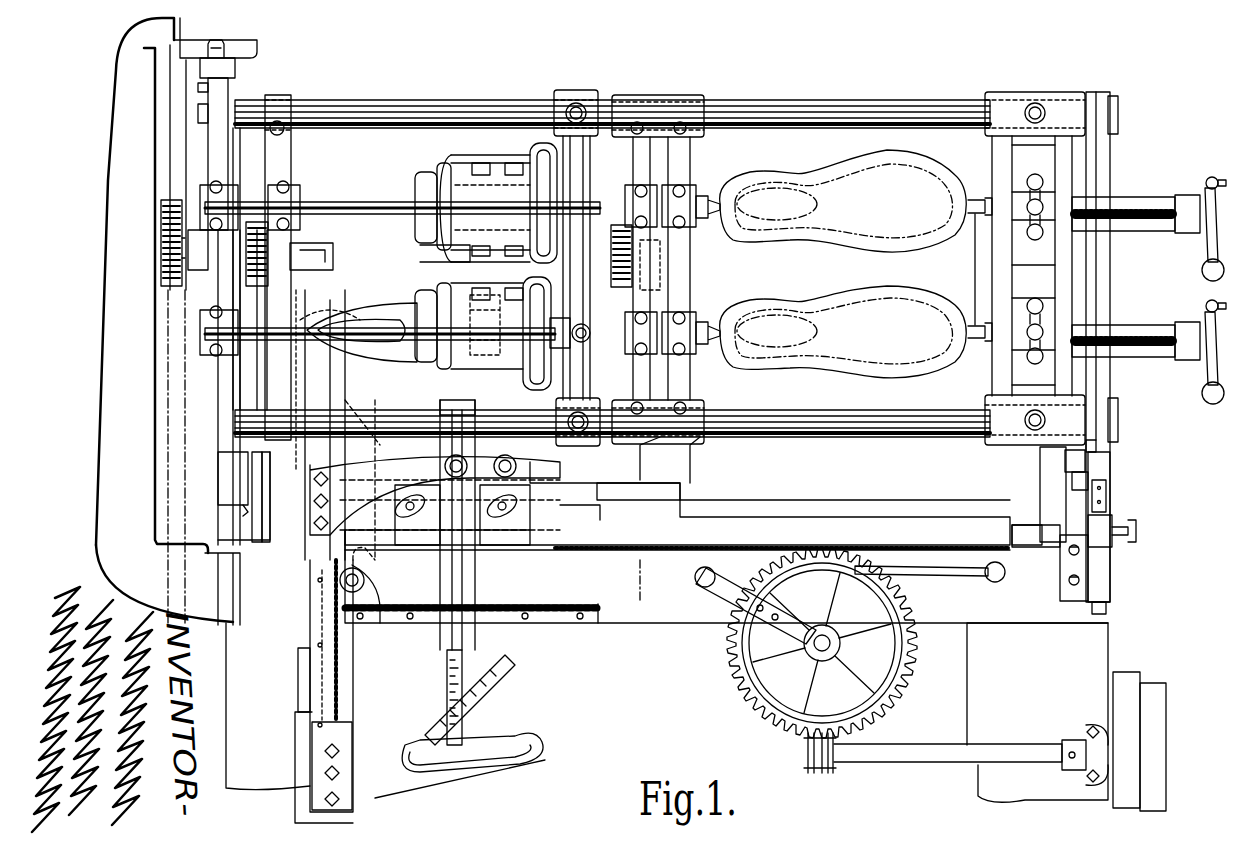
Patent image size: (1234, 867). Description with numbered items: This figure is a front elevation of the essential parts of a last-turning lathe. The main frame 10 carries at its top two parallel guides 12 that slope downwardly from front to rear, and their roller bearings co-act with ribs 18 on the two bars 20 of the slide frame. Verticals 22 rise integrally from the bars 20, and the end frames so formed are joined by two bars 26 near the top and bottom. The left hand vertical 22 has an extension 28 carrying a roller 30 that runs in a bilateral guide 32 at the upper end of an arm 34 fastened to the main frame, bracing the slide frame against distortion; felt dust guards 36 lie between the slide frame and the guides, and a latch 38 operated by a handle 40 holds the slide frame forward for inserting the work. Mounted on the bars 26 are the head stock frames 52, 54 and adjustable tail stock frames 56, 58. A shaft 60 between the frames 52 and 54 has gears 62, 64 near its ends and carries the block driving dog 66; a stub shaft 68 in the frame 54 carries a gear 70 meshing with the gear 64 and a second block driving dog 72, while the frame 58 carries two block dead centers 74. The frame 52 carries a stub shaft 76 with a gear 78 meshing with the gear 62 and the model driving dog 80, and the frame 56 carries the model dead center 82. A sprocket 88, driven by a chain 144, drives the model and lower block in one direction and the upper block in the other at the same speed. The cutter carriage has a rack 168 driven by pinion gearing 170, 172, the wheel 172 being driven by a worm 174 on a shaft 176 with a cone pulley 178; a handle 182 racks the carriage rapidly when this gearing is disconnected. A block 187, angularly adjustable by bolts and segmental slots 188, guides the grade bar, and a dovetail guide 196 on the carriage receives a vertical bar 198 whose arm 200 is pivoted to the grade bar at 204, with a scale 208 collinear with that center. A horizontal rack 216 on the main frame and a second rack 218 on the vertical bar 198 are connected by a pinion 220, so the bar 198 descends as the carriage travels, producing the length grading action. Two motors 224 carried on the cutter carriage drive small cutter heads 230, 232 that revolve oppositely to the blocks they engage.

The main frame 10 is at (1037, 712).
The guides 12 is at (255, 553).
The ribs 18 is at (1074, 480).
The bars 20 is at (1100, 470).
The verticals 22 is at (225, 367).
The bars 26 is at (834, 104).
The extension 28 is at (222, 92).
The roller 30 is at (236, 68).
The guide 32 is at (197, 56).
The arm 34 is at (118, 235).
The dust guards 36 is at (1092, 448).
The latch 38 is at (1107, 506).
The handle 40 is at (1134, 535).
The head stock frame 52 is at (283, 157).
The head stock frame 54 is at (682, 150).
The adjustable tail stock frame 56 is at (558, 138).
The adjustable tail stock frame 58 is at (1062, 158).
The shaft 60 is at (380, 206).
The gear 62 is at (265, 222).
The gear 64 is at (633, 238).
The block driving dog 66 is at (772, 176).
The stub shaft 68 is at (696, 356).
The gear 70 is at (652, 280).
The block driving dog 72 is at (772, 302).
The block dead centers 74 is at (972, 300).
The stub shaft 76 is at (325, 380).
The gear 78 is at (268, 278).
The model driving dog 80 is at (330, 296).
The model dead center 82 is at (516, 350).
The sprocket 88 is at (171, 200).
The chain 144 is at (170, 392).
The rack 168 is at (641, 560).
The pinion gearing 170 is at (728, 606).
The wheel 172 is at (748, 692).
The worm 174 is at (818, 773).
The shaft 176 is at (910, 752).
The cone pulley 178 is at (1128, 722).
The handle 182 is at (820, 588).
The block 187 is at (505, 546).
The bolts and segmental slots 188 is at (420, 546).
The dovetail guide 196 is at (310, 640).
The vertical bar 198 is at (336, 740).
The arm 200 is at (435, 480).
The pivot 204 is at (445, 448).
The scale 208 is at (456, 697).
The horizontal rack 216 is at (560, 606).
The rack 218 is at (322, 676).
The pinion 220 is at (322, 578).
The motors 224 is at (545, 170).
The cutter head 230 is at (694, 198).
The cutter head 232 is at (740, 360).